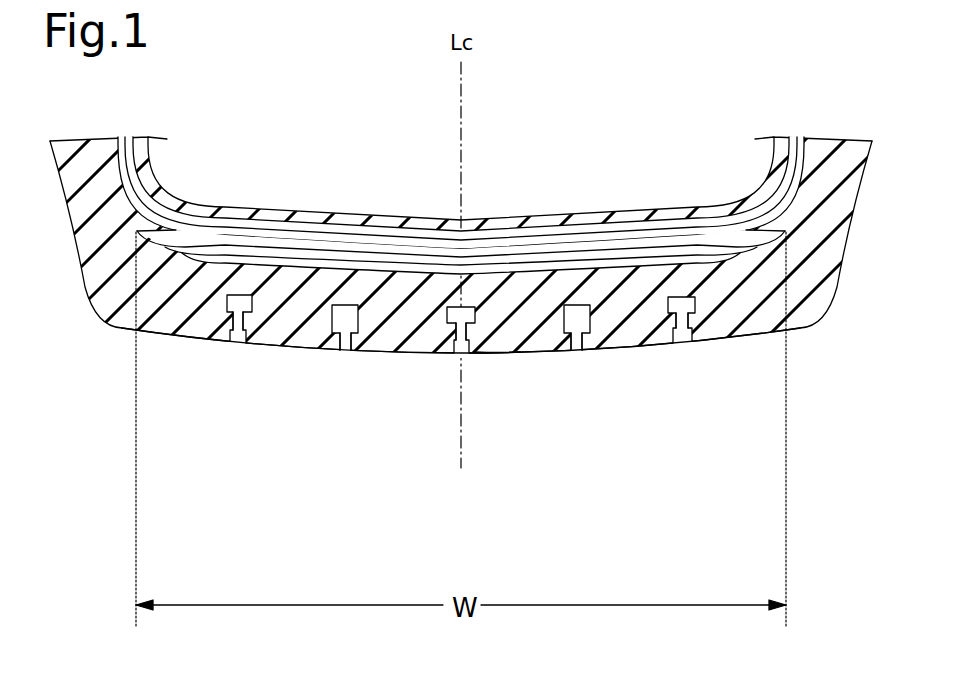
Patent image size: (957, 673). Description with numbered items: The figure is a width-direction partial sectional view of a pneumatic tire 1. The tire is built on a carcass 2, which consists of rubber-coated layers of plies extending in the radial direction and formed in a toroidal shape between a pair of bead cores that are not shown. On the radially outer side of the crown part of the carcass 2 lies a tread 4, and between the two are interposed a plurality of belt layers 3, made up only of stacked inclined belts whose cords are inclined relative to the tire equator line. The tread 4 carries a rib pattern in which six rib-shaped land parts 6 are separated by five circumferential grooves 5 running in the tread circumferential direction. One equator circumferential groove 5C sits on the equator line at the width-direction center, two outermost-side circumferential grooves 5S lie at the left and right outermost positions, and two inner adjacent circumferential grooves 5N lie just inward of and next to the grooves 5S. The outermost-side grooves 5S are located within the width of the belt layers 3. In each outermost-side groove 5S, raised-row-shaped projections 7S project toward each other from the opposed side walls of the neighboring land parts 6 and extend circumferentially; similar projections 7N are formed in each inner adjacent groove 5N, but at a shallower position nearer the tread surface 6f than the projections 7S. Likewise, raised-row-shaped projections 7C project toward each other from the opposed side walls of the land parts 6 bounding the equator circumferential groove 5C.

The pneumatic tire 1 is at (92, 334).
The carcass 2 is at (385, 248).
The belt layers 3 is at (603, 270).
The tread 4 is at (417, 313).
The circumferential grooves 5 is at (465, 440).
The outermost-side circumferential groove 5S is at (239, 352).
The inner adjacent circumferential groove 5N is at (346, 357).
The equator circumferential groove 5C is at (466, 419).
The rib-shaped land part 6 is at (171, 324).
The tread surface 6f is at (503, 352).
The raised-row-shaped projection (in outermost-side groove) 7S is at (230, 341).
The raised-row-shaped projection (in inner adjacent groove) 7N is at (338, 346).
The raised-row-shaped projection (in equator groove) 7C is at (453, 353).